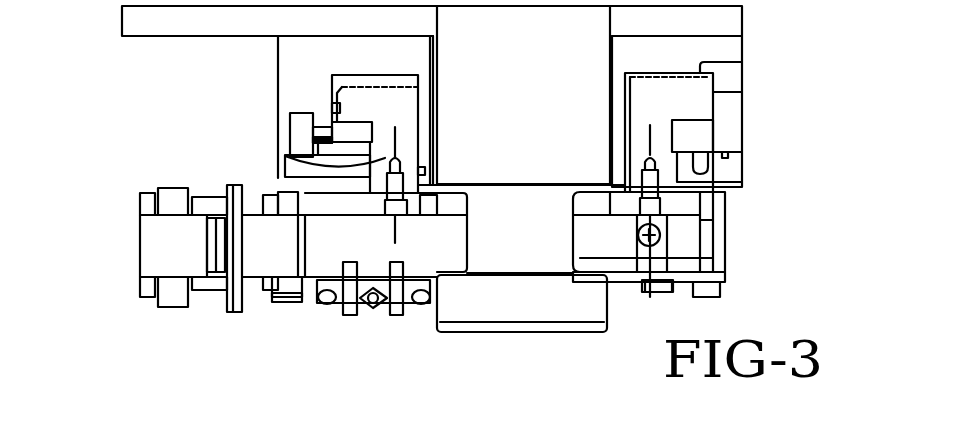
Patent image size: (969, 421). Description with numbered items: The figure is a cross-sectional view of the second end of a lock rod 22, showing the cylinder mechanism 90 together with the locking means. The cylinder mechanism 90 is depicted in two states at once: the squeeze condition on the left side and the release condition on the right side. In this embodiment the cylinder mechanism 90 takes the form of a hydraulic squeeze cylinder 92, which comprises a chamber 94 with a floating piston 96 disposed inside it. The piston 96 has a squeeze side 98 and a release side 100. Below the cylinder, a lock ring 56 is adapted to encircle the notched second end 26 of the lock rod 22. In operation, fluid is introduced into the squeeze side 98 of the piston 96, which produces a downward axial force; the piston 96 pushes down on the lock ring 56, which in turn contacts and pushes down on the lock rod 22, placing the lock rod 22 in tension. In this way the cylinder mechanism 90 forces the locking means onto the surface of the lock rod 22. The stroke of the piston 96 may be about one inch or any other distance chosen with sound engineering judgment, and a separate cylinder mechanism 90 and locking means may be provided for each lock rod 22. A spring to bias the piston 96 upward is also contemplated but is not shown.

The cylinder mechanism 90 is at (146, 76).
The lock rod 22 is at (533, 99).
The notched second end 26 is at (537, 264).
The squeeze side 98 is at (314, 77).
The release side 100 is at (332, 130).
The floating piston 96 is at (285, 157).
The hydraulic squeeze cylinder 92 is at (742, 48).
The chamber 94 is at (698, 138).
The lock ring 56 is at (318, 275).